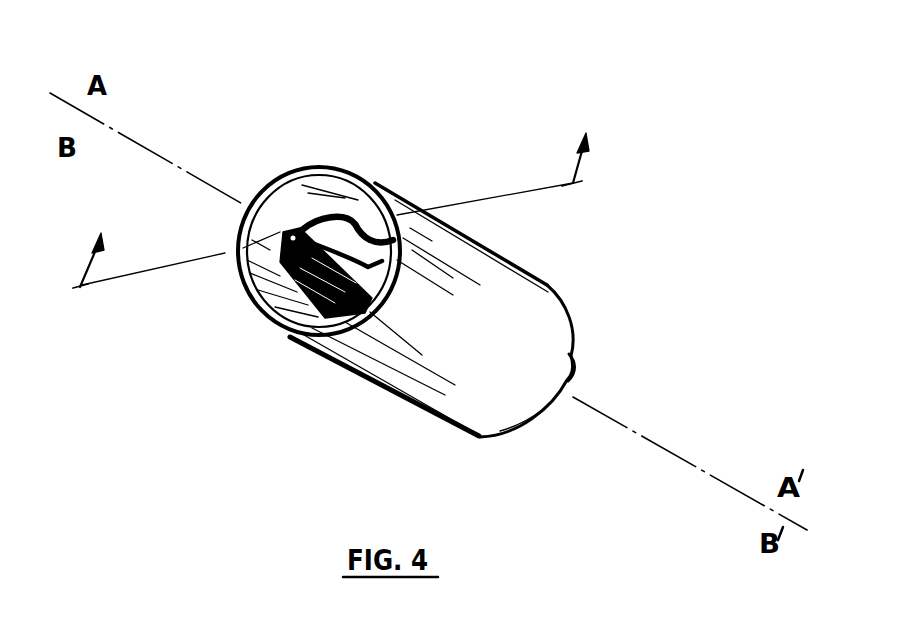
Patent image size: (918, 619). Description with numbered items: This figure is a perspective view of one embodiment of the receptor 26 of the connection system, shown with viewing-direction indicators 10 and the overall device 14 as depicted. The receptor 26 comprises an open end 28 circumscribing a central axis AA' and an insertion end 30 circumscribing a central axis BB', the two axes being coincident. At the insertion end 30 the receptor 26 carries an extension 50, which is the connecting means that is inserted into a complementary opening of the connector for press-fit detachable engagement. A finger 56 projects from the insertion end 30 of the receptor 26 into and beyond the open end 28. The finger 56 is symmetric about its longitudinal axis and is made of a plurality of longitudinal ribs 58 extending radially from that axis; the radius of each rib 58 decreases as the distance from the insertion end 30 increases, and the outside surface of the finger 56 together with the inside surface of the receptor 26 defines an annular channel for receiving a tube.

The viewing direction arrows 10 is at (334, 195).
The capsule housing 14 is at (480, 249).
The receptor 26 is at (504, 155).
The open end 28 is at (350, 210).
The insertion end 30 is at (450, 400).
The extension 50 is at (575, 376).
The finger 56 is at (293, 231).
The longitudinal ribs 58 is at (383, 198).